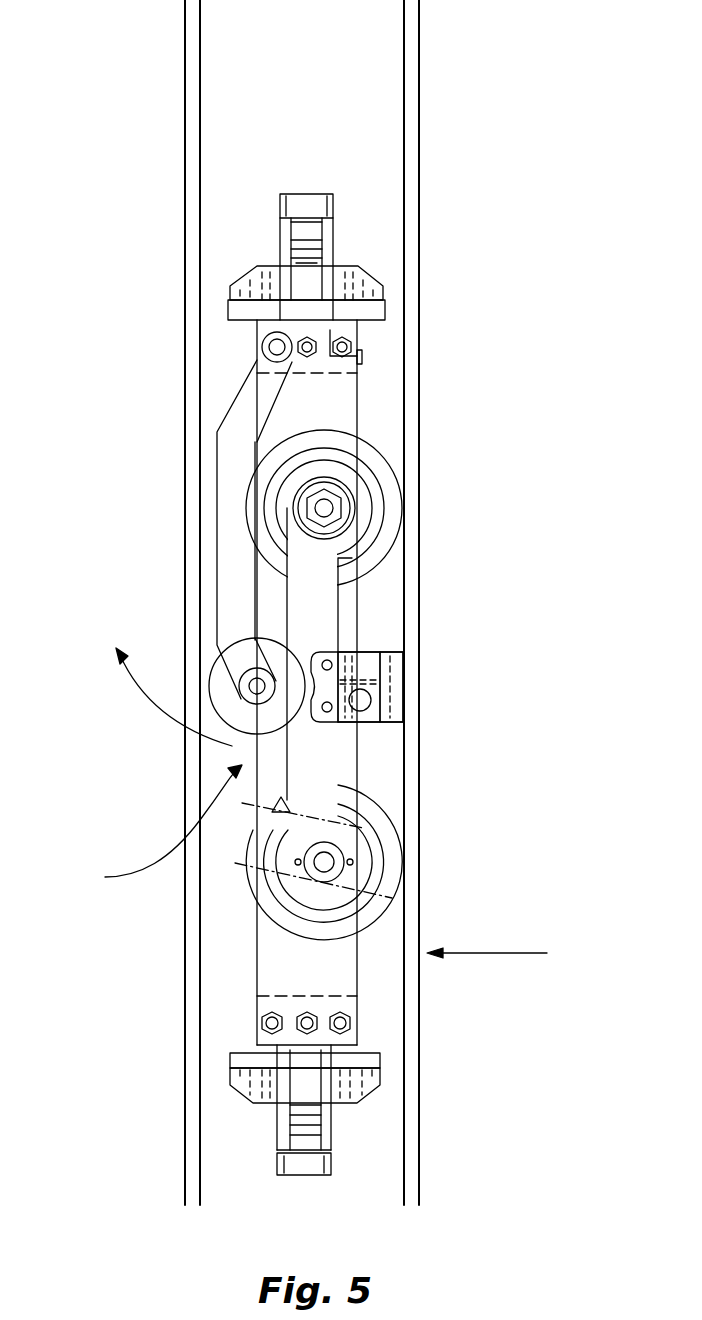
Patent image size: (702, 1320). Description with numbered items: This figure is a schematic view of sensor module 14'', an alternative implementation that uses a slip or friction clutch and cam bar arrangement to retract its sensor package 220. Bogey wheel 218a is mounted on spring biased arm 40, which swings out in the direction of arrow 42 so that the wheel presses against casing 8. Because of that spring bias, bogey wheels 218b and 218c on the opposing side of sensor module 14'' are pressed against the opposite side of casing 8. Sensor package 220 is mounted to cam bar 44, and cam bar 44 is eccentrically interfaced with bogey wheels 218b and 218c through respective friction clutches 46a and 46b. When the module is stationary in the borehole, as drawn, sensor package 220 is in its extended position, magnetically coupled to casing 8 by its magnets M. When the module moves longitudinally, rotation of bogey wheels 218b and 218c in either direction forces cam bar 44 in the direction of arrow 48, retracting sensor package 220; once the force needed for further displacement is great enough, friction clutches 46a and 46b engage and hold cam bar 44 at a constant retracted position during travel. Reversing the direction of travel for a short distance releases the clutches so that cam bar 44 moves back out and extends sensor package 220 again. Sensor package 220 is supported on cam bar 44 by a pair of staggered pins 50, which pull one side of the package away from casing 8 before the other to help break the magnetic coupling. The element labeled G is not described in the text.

The casing 8 is at (410, 125).
The spring biased arm 40 is at (230, 530).
The slip or friction clutch 46a is at (343, 500).
The bogey wheel 218b is at (402, 508).
The staggered pins 50 is at (336, 661).
The gearbox G is at (373, 675).
The sensor package 220 is at (393, 688).
The magnets M is at (398, 707).
The cam bar 44 is at (315, 762).
The bogey wheel 218c is at (400, 862).
The slip or friction clutch 46b is at (312, 873).
The bogey wheel 218a is at (218, 658).
The direction of arrow 42 is at (171, 697).
The sensor module 14'' is at (151, 826).
The direction of arrow 48 is at (487, 943).